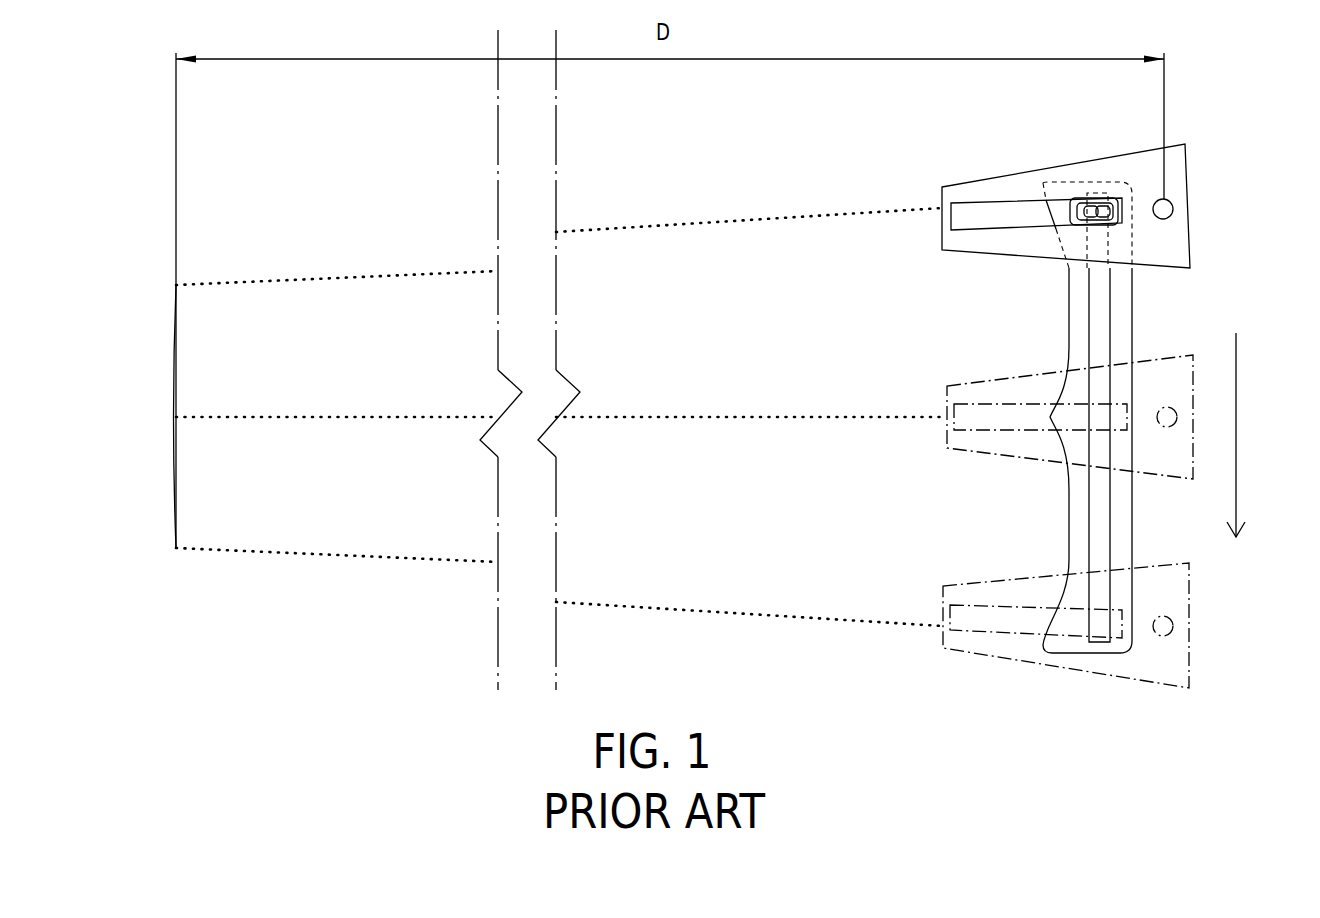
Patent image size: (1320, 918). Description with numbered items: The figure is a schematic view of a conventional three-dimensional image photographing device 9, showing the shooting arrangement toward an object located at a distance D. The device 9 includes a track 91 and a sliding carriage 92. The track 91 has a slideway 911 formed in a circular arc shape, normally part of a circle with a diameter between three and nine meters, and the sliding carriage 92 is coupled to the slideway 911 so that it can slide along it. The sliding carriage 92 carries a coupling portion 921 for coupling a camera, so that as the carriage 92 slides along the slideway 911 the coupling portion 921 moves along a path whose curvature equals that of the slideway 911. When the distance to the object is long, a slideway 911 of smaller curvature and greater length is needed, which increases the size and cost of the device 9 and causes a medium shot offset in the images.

The conventional 3D image photographing device 9 is at (1195, 93).
The sliding carriage 92 is at (1182, 158).
The coupling portion 921 is at (1173, 210).
The track 91 is at (1122, 324).
The slideway 911 is at (1102, 300).